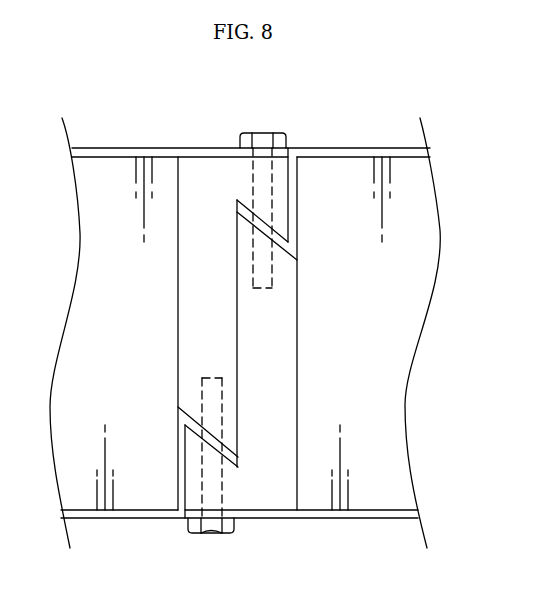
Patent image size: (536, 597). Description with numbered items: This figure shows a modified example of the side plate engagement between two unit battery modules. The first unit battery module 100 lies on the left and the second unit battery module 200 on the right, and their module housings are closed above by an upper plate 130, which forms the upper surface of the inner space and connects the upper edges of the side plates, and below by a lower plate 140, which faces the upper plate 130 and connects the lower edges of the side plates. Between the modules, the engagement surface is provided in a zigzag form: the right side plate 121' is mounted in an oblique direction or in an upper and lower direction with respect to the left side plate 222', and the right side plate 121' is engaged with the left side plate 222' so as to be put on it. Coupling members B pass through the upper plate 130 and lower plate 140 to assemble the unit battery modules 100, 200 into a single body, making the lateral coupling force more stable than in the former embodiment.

The first unit battery module 100 is at (121, 185).
The second unit battery module 200 is at (338, 184).
The upper plate 130 is at (160, 148).
The lower plate 140 is at (137, 518).
The right side plate 121' is at (240, 275).
The left side plate 222' is at (239, 497).
The coupling member B is at (260, 132).